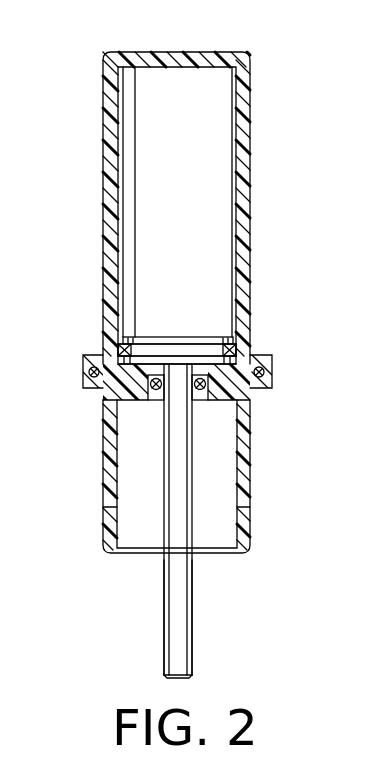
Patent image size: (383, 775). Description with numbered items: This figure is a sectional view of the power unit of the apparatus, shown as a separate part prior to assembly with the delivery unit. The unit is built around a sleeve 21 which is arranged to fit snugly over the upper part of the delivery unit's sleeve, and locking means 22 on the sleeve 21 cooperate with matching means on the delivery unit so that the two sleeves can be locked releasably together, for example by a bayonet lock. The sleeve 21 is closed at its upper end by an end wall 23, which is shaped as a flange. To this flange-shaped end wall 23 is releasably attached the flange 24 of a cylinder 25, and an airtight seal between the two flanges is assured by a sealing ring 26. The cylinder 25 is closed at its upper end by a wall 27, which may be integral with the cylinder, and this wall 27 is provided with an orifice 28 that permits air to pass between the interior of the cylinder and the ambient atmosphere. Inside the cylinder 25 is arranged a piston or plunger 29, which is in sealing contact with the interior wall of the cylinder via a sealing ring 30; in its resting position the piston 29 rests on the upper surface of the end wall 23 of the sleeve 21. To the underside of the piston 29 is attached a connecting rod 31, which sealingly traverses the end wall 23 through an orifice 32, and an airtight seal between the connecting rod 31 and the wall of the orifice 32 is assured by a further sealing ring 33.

The sleeve 21 is at (103, 444).
The locking means 22 is at (103, 518).
The end wall 23 is at (263, 389).
The flange 24 is at (262, 355).
The cylinder 25 is at (103, 153).
The sealing ring 26 is at (90, 375).
The wall 27 is at (131, 52).
The orifice 28 is at (177, 52).
The piston 29 is at (181, 337).
The sealing ring 30 is at (121, 350).
The connecting rod 31 is at (163, 648).
The orifice 32 is at (182, 393).
The sealing ring 33 is at (157, 392).